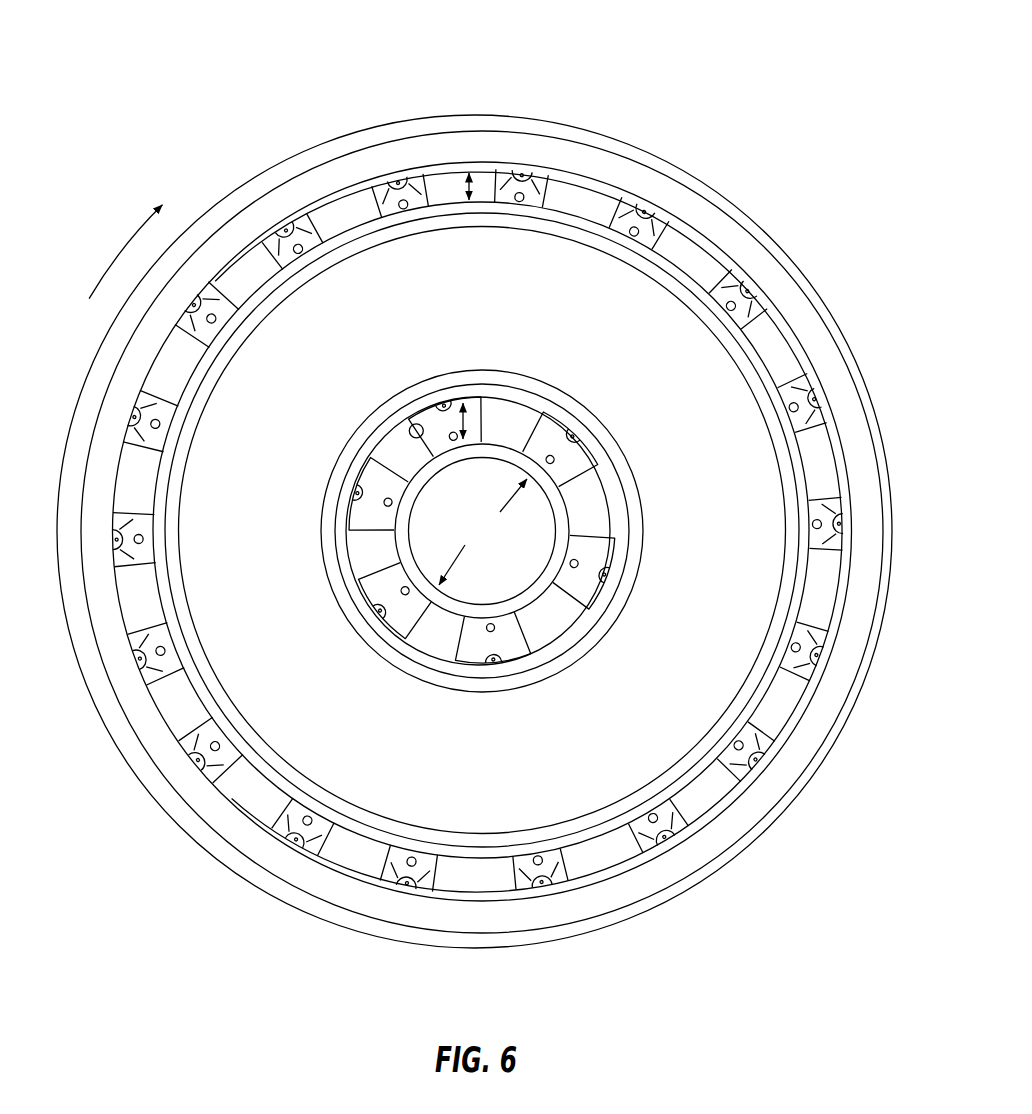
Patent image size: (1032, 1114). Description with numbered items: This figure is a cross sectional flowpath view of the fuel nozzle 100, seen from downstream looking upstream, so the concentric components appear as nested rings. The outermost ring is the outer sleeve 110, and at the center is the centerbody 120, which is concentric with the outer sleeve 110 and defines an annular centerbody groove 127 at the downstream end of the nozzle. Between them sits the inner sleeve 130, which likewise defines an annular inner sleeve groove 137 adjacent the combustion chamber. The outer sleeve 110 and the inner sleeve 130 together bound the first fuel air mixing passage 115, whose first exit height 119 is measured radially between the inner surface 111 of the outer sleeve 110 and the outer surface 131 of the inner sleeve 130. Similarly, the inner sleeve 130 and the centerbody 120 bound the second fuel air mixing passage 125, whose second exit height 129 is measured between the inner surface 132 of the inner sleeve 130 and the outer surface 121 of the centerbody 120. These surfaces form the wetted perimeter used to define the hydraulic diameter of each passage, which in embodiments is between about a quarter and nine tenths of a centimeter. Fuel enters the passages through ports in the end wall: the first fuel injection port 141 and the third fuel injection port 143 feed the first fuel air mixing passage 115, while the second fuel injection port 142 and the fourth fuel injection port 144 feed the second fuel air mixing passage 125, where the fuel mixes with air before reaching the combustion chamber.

The fuel nozzle 100 is at (474, 479).
The outer sleeve 110 is at (623, 167).
The inner surface of the outer sleeve 111 is at (571, 192).
The first fuel air mixing passage 115 is at (133, 519).
The first exit height 119 is at (472, 170).
The centerbody 120 is at (533, 456).
The outer surface of the centerbody 121 is at (405, 471).
The second fuel air mixing passage 125 is at (390, 569).
The annular centerbody groove 127 is at (463, 517).
The second exit height 129 is at (468, 440).
The inner sleeve 130 is at (682, 262).
The outer surface of the inner sleeve 131 is at (342, 232).
The inner surface of the inner sleeve 132 is at (423, 424).
The annular inner sleeve groove 137 is at (517, 347).
The first fuel injection port 141 is at (281, 221).
The second fuel injection port 142 is at (407, 612).
The third fuel injection port 143 is at (213, 324).
The fourth fuel injection port 144 is at (374, 618).